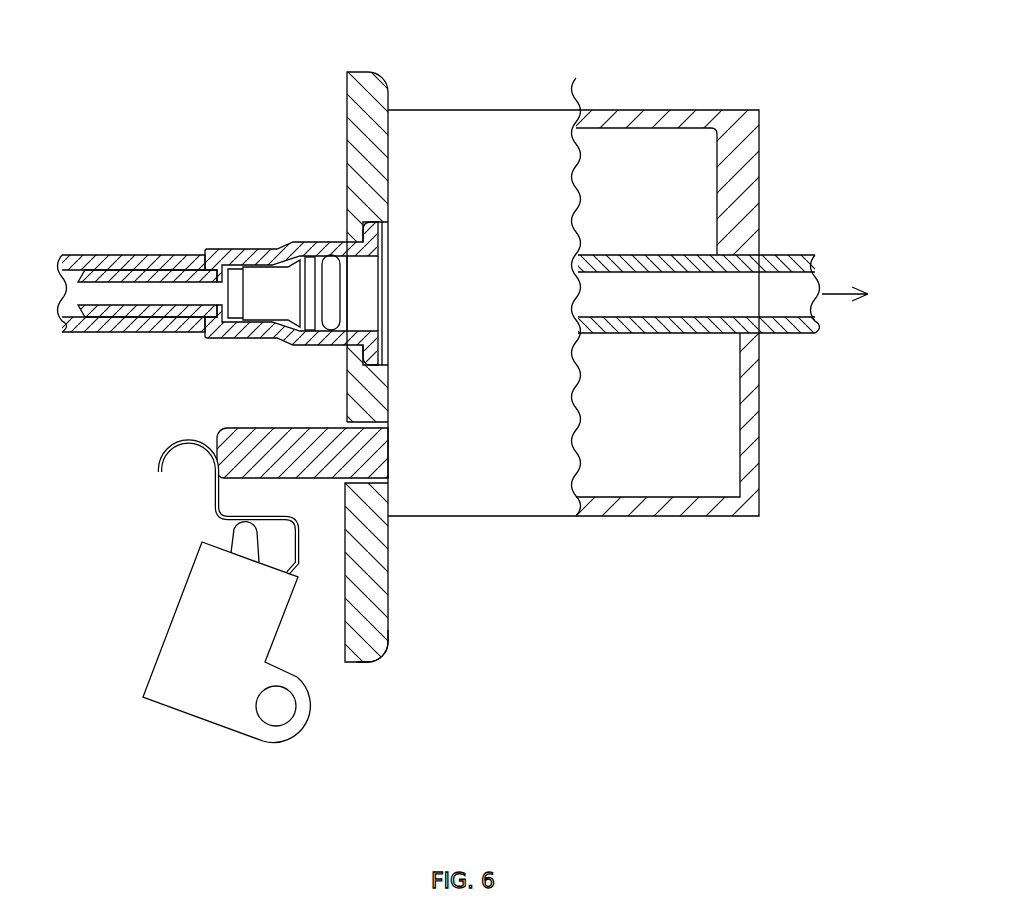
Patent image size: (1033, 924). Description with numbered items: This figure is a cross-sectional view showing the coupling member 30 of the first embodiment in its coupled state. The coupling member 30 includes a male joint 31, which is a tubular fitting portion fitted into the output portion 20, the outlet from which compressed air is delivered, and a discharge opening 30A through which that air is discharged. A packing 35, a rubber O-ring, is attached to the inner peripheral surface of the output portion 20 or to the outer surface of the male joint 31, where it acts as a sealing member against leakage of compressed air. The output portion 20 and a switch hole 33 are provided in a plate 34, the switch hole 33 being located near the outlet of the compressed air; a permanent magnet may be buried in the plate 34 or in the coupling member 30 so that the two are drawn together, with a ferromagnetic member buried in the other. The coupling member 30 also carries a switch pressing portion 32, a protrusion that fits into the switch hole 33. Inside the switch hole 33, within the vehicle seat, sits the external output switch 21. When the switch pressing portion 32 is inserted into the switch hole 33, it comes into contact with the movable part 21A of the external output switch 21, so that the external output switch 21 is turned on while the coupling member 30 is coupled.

The output portion 20 is at (220, 270).
The external output switch 21 is at (192, 733).
The movable part 21A is at (157, 456).
The coupling member 30 is at (525, 108).
The discharge opening 30A is at (787, 262).
The male joint 31 is at (267, 263).
The switch pressing portion 32 is at (255, 428).
The switch hole 33 is at (360, 468).
The plate 34 is at (376, 655).
The packing 35 is at (332, 256).